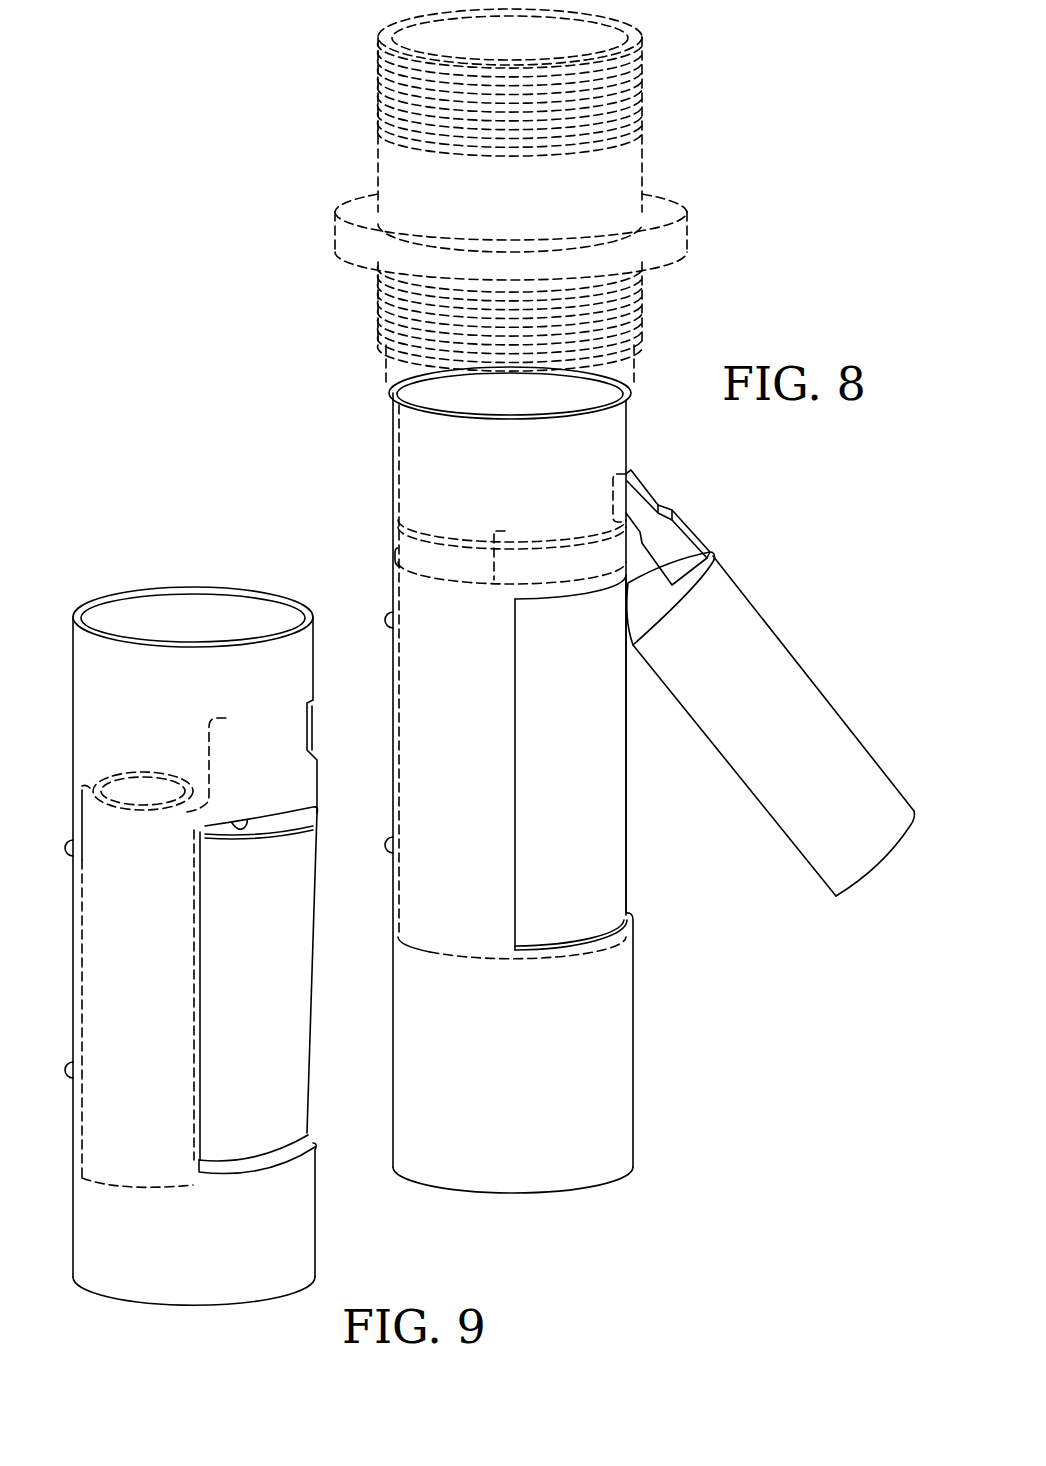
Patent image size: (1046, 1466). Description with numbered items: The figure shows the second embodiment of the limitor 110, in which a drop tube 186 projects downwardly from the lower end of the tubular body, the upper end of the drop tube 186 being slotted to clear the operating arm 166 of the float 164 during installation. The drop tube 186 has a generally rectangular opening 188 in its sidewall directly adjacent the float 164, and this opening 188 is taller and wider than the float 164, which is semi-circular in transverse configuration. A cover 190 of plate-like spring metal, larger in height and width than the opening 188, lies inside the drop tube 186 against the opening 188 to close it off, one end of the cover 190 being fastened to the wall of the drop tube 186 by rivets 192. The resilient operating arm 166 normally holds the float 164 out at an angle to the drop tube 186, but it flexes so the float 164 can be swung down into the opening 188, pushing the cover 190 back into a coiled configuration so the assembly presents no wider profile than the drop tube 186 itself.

In FIG. 8, the limitor 110 is at (710, 101).
In FIG. 8, the drop tube 186 is at (612, 1040).
In FIG. 9, the drop tube 186 is at (87, 697).
In FIG. 8, the opening 188 is at (515, 800).
In FIG. 9, the opening 188 is at (247, 826).
In FIG. 8, the cover 190 is at (612, 809).
In FIG. 9, the cover 190 is at (228, 757).
In FIG. 8, the operating arm 166 is at (658, 489).
In FIG. 9, the operating arm 166 is at (315, 748).
In FIG. 8, the float 164 is at (774, 637).
In FIG. 9, the float 164 is at (290, 1040).
In FIG. 9, the rivets 192 is at (72, 850).